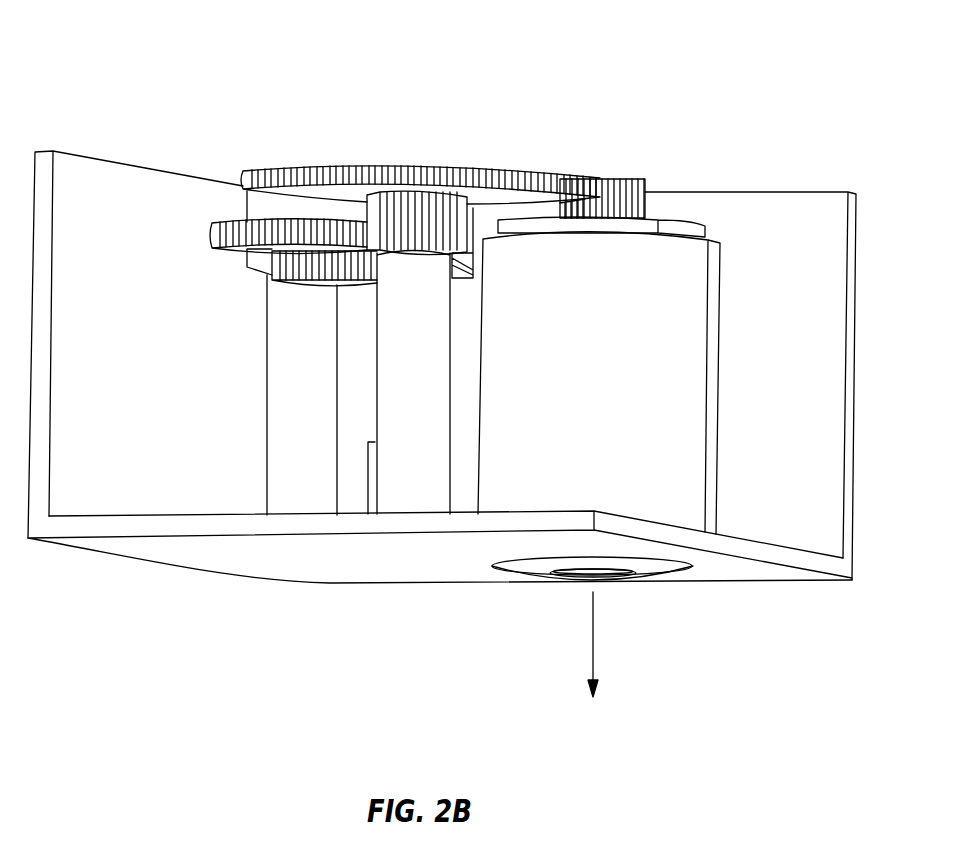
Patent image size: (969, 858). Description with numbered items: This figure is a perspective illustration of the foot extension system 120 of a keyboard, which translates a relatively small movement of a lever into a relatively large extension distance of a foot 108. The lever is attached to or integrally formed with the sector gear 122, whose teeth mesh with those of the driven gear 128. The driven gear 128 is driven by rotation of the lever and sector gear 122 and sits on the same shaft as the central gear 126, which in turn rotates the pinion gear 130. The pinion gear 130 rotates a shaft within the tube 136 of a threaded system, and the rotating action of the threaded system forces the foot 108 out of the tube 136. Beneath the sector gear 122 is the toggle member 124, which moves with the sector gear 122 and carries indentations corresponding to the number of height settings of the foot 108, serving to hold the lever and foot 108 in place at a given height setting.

The foot 108 is at (655, 600).
The foot extension system 120 is at (616, 60).
The sector gear 122 is at (200, 235).
The toggle member 124 is at (300, 295).
The central gear 126 is at (358, 150).
The driven gear 128 is at (410, 270).
The pinion gear 130 is at (623, 168).
The tube 136 is at (718, 332).